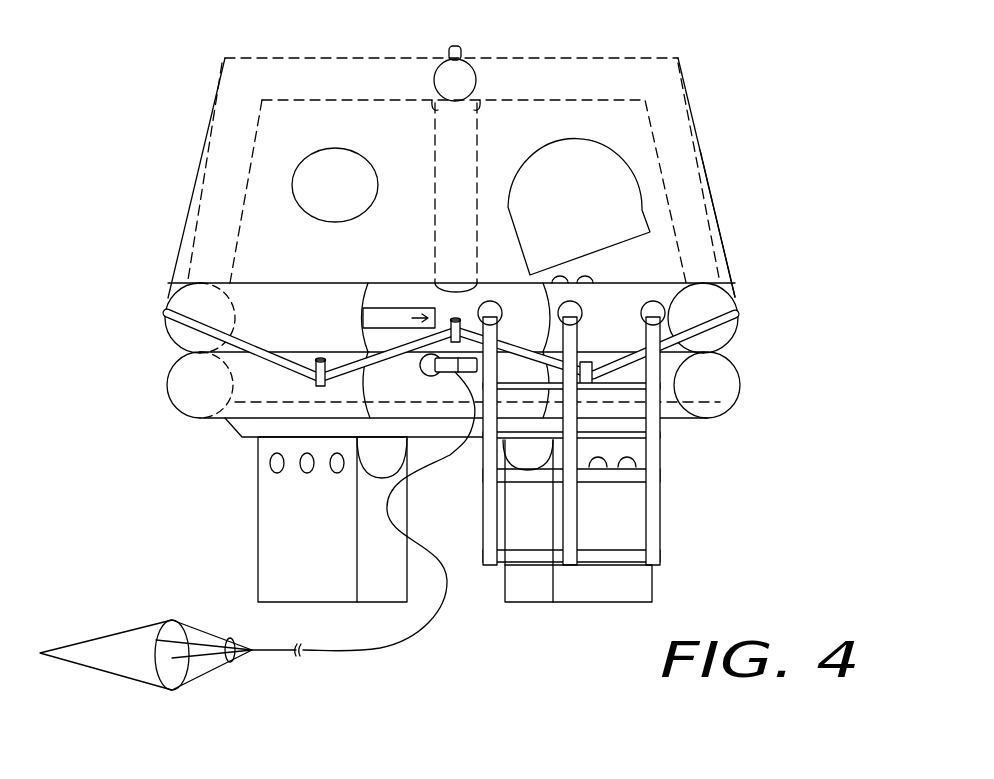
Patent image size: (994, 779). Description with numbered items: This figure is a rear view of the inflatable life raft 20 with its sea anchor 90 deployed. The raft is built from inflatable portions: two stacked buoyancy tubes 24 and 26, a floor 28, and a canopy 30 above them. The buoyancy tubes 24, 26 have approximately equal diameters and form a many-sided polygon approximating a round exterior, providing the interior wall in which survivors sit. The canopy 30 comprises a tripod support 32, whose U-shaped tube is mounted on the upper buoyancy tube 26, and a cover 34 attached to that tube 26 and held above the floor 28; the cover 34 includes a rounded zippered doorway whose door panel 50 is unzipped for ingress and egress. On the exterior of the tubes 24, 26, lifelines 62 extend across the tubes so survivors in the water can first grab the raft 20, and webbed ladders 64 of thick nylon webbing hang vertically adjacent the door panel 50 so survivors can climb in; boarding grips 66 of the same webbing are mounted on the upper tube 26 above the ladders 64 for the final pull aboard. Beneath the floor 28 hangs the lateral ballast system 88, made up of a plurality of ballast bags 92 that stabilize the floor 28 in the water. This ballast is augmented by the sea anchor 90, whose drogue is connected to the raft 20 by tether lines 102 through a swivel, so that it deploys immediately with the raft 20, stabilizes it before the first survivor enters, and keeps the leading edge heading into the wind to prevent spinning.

The life raft 20 is at (180, 80).
The buoyancy tube 24 is at (727, 395).
The buoyancy tube 26 is at (733, 300).
The floor 28 is at (233, 427).
The canopy 30 is at (710, 150).
The tripod support 32 is at (522, 78).
The cover 34 is at (722, 242).
The door panel 50 is at (592, 170).
The lifelines 62 is at (188, 333).
The webbed ladders 64 is at (655, 540).
The boarding grips 66 is at (577, 277).
The lateral ballast system 88 is at (258, 492).
The sea anchor 90 is at (110, 628).
The ballast bags 92 is at (378, 593).
The tether lines 102 is at (385, 642).